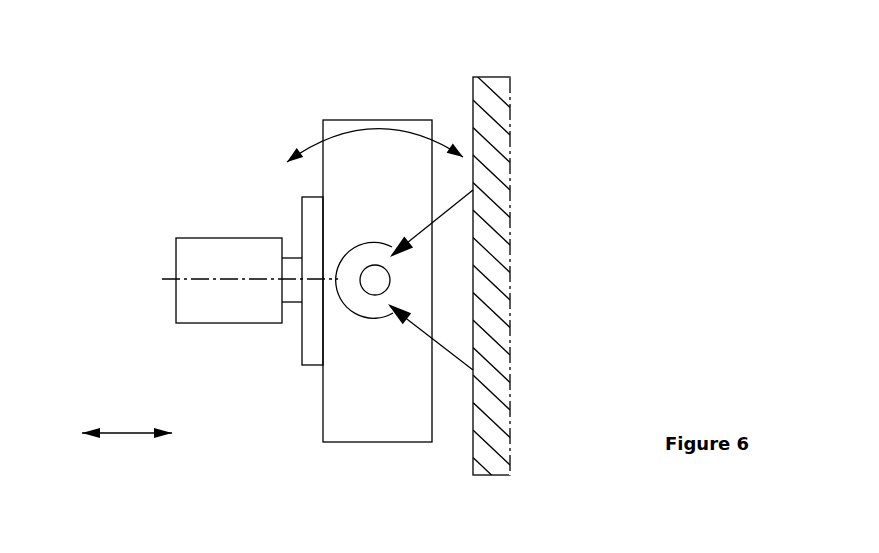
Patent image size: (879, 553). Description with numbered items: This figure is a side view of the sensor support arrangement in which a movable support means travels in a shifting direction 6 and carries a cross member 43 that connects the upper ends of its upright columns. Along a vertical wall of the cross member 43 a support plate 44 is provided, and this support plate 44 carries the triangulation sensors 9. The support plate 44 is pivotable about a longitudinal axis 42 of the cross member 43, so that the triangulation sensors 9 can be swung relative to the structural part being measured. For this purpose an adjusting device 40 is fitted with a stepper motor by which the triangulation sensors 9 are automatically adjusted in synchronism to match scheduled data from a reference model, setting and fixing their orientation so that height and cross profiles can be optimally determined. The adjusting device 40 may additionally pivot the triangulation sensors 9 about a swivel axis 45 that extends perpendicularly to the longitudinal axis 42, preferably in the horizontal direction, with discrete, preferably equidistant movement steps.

The adjusting device 40 is at (265, 198).
The swivel axis 45 is at (176, 279).
The triangulation sensor 9 is at (227, 323).
The support plate 44 is at (370, 428).
The longitudinal axis 42 is at (375, 280).
The cross member 43 is at (473, 110).
The shifting direction 6 is at (120, 433).